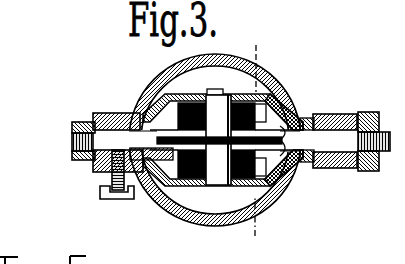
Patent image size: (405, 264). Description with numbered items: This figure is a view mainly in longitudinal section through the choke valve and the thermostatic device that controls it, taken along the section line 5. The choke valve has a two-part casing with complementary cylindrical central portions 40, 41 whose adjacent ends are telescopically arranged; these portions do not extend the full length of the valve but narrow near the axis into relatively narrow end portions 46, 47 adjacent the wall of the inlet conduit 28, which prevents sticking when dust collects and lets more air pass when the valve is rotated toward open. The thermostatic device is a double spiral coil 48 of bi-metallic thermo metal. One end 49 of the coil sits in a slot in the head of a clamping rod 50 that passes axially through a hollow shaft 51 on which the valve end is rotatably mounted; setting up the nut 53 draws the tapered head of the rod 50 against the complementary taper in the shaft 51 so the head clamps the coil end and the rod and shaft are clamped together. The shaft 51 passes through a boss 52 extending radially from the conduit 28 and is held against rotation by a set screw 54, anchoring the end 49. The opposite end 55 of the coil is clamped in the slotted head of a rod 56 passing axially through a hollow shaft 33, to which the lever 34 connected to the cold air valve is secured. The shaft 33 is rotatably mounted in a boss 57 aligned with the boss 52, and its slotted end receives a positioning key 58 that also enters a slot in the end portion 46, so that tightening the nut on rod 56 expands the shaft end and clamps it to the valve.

The section line 5- 5 is at (257, 143).
The inlet conduit 28 is at (208, 224).
The hollow shaft 33 is at (345, 169).
The lever 34 is at (338, 115).
The cylindrical central portion 40 is at (196, 186).
The cylindrical central portion 41 is at (243, 187).
The end portion 46 is at (291, 108).
The end portion 47 is at (149, 102).
The double spiral coil 48 is at (224, 94).
The end of coil 49 is at (163, 200).
The clamping rod 50 is at (120, 198).
The hollow shaft 51 is at (130, 112).
The boss 52 is at (96, 180).
The nut 53 is at (86, 122).
The set screw 54 is at (102, 197).
The end of coil 55 is at (278, 183).
The rod 56 is at (304, 164).
The boss 57 is at (312, 115).
The positioning key 58 is at (278, 90).